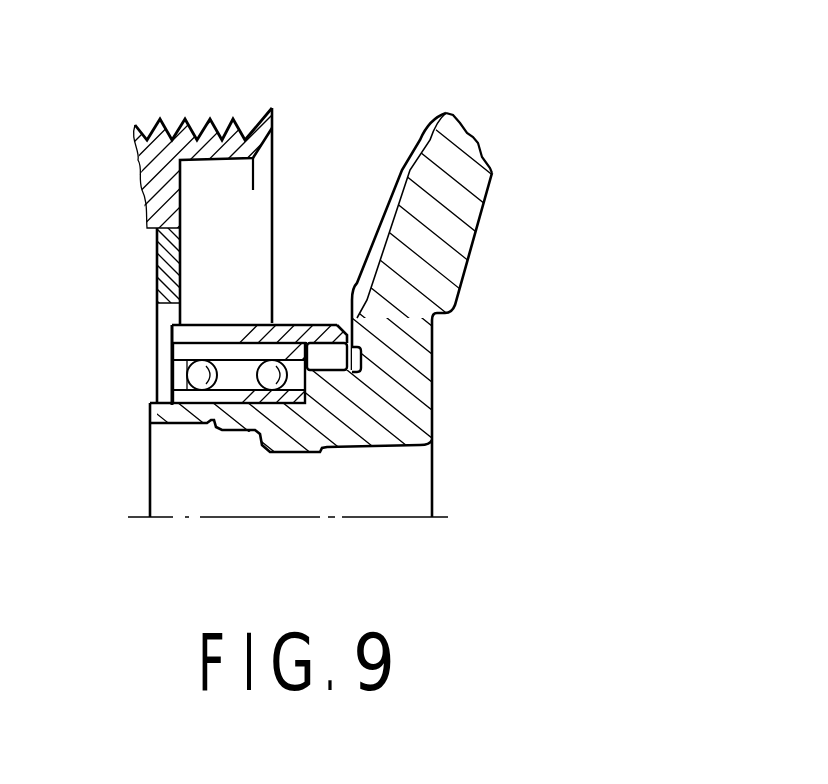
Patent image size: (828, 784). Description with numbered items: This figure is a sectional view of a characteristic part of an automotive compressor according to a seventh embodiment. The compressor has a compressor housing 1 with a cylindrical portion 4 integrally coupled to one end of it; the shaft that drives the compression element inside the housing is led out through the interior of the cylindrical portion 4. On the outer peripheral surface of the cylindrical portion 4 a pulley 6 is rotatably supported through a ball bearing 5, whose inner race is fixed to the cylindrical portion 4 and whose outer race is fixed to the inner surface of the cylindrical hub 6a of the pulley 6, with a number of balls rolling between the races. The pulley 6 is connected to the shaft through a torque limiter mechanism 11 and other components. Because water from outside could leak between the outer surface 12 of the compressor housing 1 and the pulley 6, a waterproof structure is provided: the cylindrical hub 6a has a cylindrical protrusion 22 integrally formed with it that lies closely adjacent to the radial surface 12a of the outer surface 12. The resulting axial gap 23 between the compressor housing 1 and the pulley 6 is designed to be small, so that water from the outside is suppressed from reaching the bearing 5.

The compressor housing 1 is at (428, 148).
The cylindrical portion 4 is at (307, 435).
The ball bearing 5 is at (171, 368).
The pulley 6 is at (273, 128).
The cylindrical hub 6a is at (217, 324).
The torque limiter mechanism 11 is at (156, 270).
The outer surface 12 is at (386, 206).
The radial surface 12a is at (349, 316).
The cylindrical protrusion 22 is at (258, 324).
The axial gap 23 is at (337, 323).